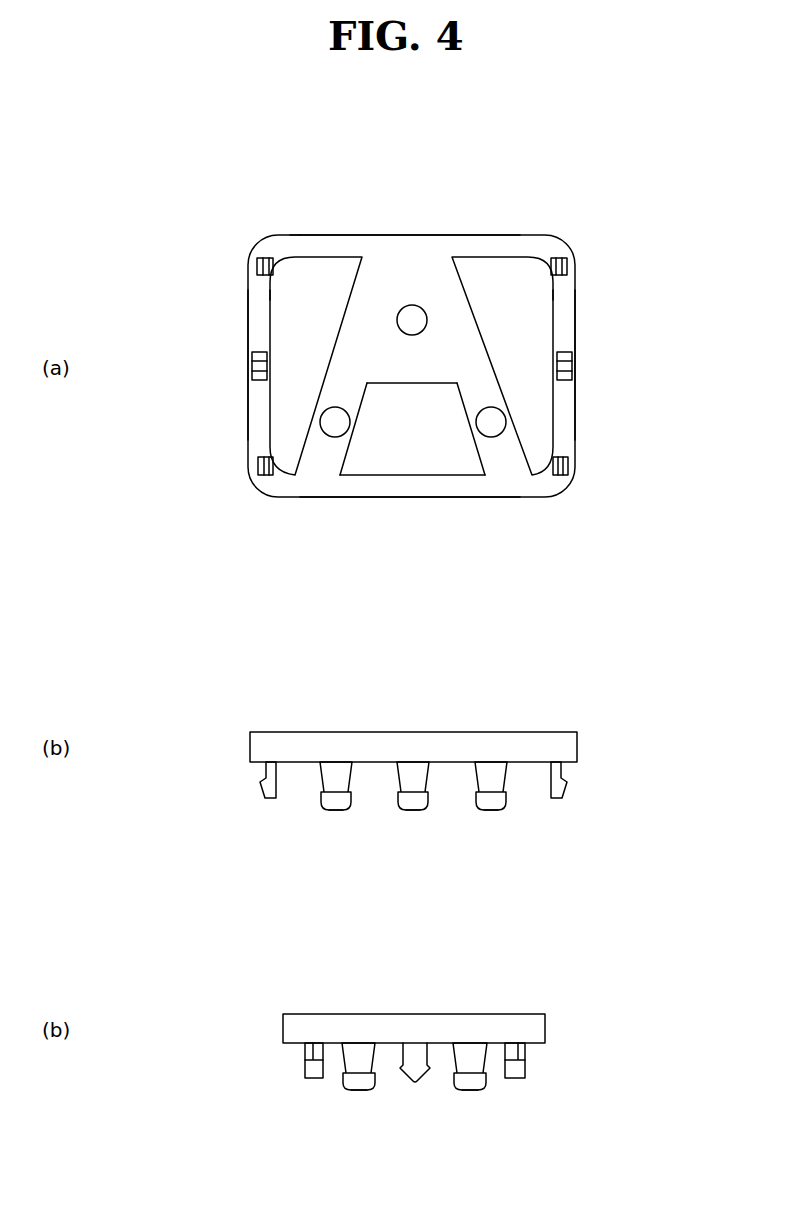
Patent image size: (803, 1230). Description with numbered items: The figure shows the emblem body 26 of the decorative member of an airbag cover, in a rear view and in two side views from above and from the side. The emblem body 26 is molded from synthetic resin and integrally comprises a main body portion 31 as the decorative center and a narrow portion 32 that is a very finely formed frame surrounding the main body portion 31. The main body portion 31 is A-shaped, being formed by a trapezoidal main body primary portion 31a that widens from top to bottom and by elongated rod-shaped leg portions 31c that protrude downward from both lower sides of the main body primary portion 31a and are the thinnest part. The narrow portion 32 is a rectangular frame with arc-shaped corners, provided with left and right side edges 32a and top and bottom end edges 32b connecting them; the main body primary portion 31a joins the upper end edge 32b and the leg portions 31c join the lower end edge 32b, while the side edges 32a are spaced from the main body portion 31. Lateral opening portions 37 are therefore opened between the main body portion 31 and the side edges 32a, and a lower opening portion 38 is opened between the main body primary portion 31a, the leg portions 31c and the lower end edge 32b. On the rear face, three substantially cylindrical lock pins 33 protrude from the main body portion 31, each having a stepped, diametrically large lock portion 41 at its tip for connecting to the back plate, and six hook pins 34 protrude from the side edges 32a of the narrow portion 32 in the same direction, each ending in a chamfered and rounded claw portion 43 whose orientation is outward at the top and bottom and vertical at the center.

The emblem body 26 is at (490, 235).
The main body portion 31 is at (415, 368).
The main body primary portion 31a is at (360, 262).
The leg portions 31c is at (352, 447).
The narrow portion 32 is at (522, 235).
The side edges 32a is at (248, 418).
The end edges 32b is at (308, 235).
The lock pins 33 is at (413, 317).
The hook pins 34 is at (409, 676).
The lateral opening portions 37 is at (290, 320).
The lower opening portion 38 is at (425, 458).
The lock portion 41 is at (337, 812).
The claw portion 43 is at (258, 268).